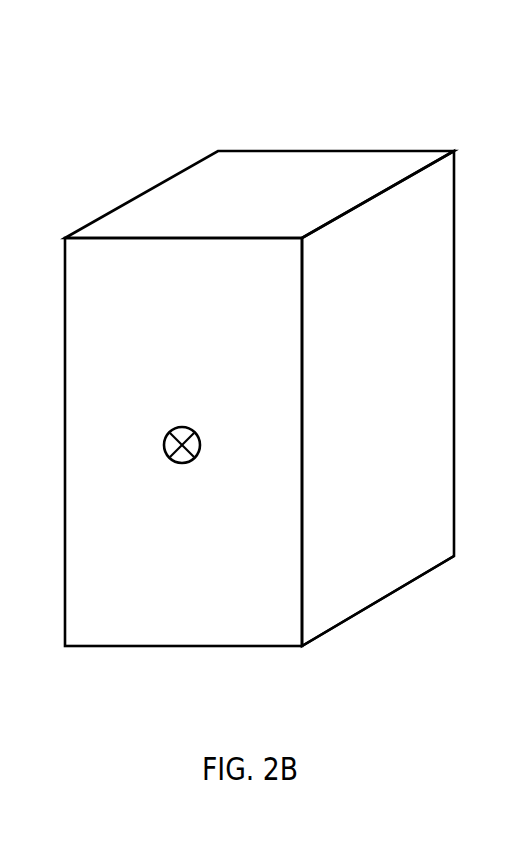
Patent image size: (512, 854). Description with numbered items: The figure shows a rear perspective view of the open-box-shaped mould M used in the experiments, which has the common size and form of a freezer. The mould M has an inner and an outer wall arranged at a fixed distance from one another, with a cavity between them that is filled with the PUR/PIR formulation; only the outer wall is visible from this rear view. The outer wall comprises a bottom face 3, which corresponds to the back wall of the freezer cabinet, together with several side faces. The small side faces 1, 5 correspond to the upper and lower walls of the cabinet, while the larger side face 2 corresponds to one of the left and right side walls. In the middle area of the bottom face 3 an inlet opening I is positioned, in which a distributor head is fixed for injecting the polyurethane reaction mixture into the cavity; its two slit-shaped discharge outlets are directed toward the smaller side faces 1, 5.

The mould M is at (267, 373).
The side face 1 is at (293, 165).
The side face 2 is at (415, 388).
The bottom face 3 is at (186, 625).
The side face 5 is at (385, 623).
The inlet opening I is at (182, 426).